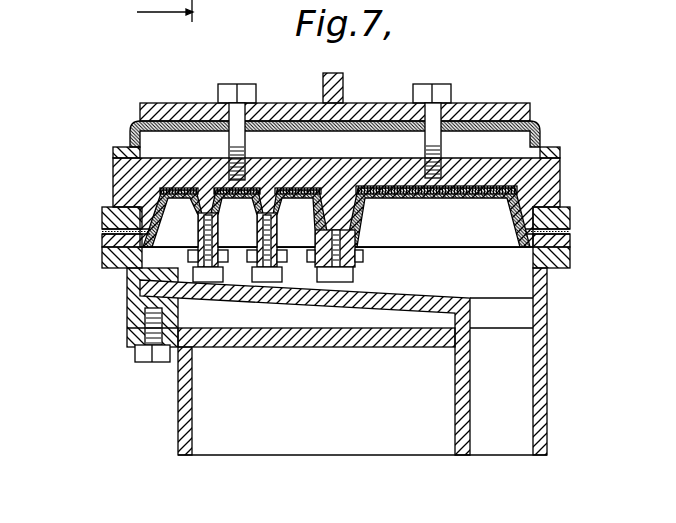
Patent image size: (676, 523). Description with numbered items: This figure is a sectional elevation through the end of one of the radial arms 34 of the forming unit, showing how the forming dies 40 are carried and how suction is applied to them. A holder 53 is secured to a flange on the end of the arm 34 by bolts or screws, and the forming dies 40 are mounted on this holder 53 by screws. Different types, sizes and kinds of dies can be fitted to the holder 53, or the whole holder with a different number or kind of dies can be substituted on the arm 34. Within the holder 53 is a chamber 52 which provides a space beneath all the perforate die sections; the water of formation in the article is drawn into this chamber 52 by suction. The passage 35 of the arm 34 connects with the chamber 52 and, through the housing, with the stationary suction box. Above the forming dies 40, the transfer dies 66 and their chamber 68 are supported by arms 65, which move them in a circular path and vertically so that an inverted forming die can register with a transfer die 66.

The arms 65 is at (499, 103).
The chamber 68 is at (147, 141).
The transfer dies 66 is at (124, 182).
The forming dies 40 is at (98, 239).
The holder 53 is at (157, 282).
The arm 34 is at (178, 423).
The chamber 52 is at (396, 285).
The passage 35 is at (500, 443).